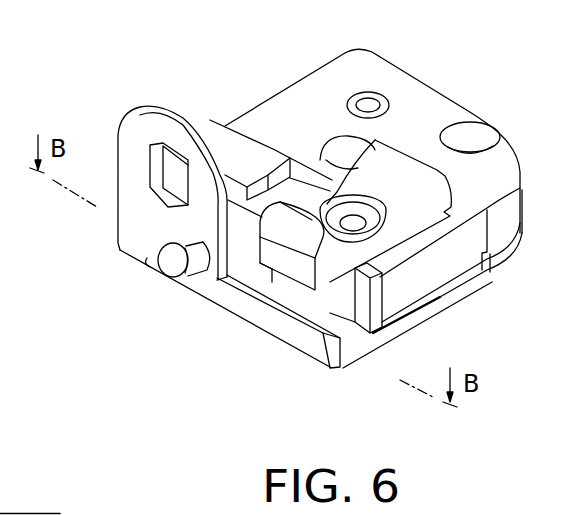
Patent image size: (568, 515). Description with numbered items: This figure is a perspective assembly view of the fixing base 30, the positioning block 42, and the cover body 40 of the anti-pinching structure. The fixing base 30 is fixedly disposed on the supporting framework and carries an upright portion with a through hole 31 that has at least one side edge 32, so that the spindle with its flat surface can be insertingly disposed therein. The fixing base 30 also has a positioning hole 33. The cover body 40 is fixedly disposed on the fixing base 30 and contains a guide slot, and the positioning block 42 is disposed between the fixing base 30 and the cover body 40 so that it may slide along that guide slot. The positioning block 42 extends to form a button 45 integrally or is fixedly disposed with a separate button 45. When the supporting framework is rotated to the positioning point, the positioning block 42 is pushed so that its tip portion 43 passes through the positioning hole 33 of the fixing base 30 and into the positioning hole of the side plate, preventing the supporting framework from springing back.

The fixing base 30 is at (383, 343).
The through hole 31 is at (172, 178).
The side edge 32 is at (167, 158).
The positioning hole 33 is at (197, 266).
The cover body 40 is at (278, 75).
The positioning block 42 is at (332, 313).
The tip portion 43 is at (170, 270).
The button 45 is at (278, 238).